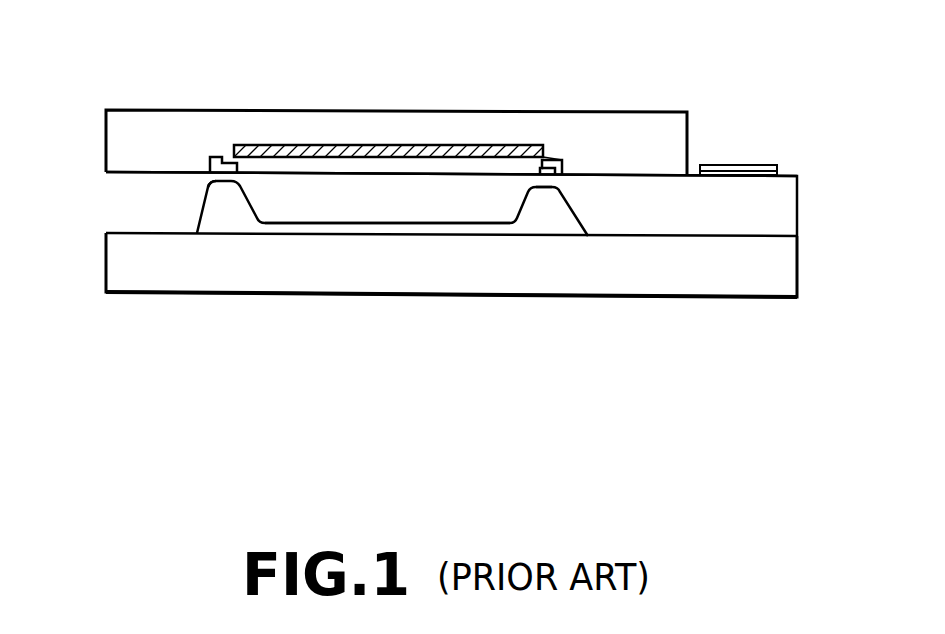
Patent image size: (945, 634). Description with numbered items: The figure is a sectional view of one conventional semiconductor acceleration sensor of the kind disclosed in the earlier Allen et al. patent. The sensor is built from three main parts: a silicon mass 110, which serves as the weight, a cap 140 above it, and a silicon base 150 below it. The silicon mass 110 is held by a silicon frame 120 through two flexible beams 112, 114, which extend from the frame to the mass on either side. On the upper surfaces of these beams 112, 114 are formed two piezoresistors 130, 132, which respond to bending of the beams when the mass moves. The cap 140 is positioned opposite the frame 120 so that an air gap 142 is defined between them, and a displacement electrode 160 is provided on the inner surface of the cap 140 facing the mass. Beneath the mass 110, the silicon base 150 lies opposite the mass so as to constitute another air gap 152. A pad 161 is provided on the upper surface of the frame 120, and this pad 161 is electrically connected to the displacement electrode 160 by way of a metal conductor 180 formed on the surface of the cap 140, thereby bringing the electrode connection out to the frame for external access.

The silicon mass 110 is at (330, 197).
The beam 112 is at (224, 183).
The beam 114 is at (549, 188).
The silicon frame 120 is at (787, 203).
The piezoresistor 130 is at (218, 156).
The piezoresistor 132 is at (550, 160).
The cap 140 is at (657, 133).
The air gap 142 is at (297, 168).
The silicon base 150 is at (780, 267).
The air gap 152 is at (400, 226).
The displacement electrode 160 is at (420, 145).
The pad 161 is at (748, 168).
The metal conductor 180 is at (565, 158).